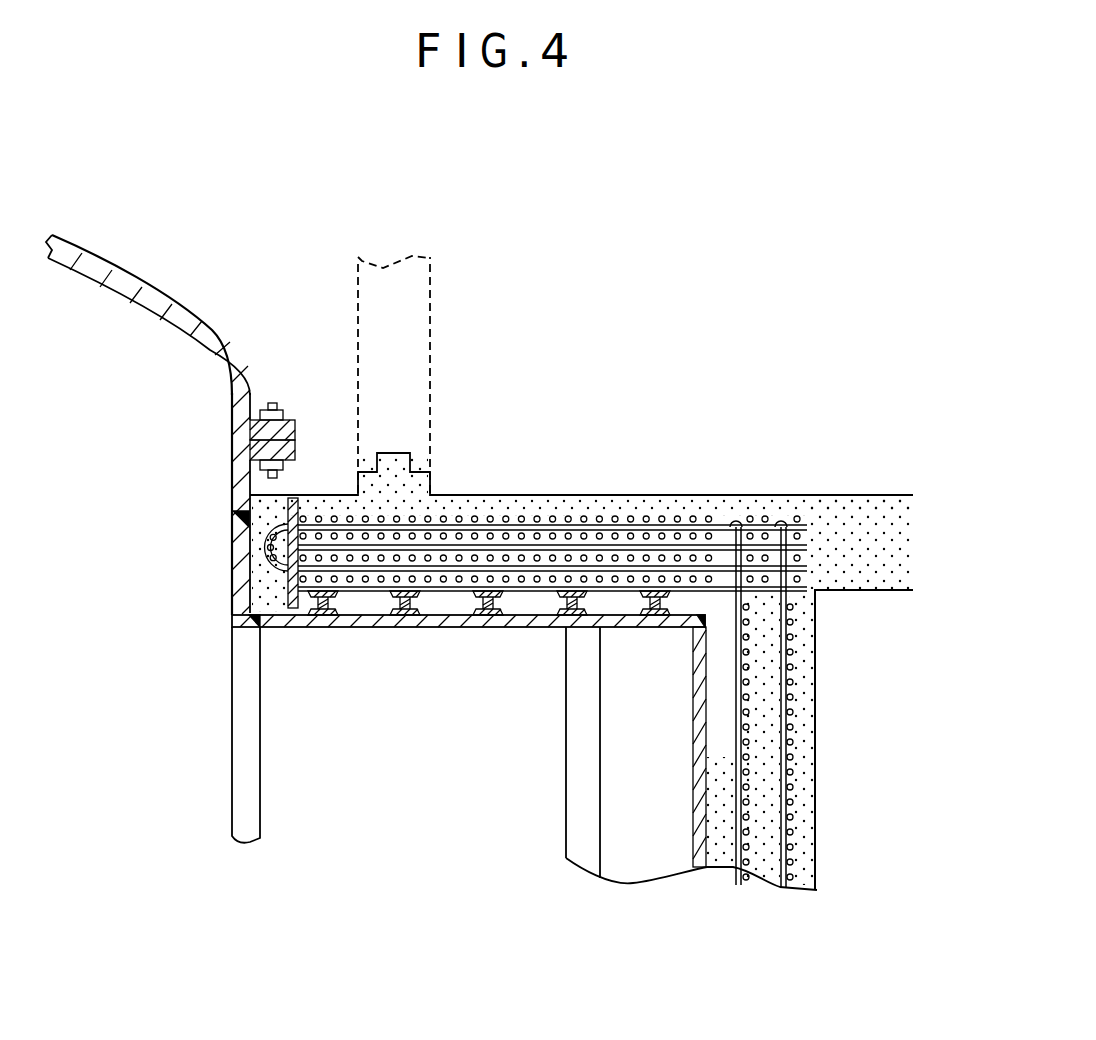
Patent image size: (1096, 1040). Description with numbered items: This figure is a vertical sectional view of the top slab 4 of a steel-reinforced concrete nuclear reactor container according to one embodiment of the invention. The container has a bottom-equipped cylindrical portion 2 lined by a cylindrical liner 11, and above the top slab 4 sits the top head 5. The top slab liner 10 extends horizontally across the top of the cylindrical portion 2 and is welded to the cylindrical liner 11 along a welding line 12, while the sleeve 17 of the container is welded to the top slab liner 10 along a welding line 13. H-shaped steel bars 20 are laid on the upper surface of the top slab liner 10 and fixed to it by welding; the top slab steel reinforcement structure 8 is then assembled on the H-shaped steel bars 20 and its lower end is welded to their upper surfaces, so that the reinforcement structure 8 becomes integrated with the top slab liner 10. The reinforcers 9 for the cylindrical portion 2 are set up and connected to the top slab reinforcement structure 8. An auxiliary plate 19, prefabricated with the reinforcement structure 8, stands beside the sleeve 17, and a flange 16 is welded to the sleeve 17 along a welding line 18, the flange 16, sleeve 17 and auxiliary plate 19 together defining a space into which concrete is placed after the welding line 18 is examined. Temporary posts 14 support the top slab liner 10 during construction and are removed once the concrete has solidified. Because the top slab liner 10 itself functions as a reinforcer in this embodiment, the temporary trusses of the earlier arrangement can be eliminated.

The cylindrical portion 2 is at (805, 755).
The top slab 4 is at (617, 497).
The top head 5 is at (192, 296).
The top slab steel reinforcement structure 8 is at (518, 516).
The reinforcers for the cylindrical portion 9 is at (788, 713).
The top slab liner 10 is at (492, 626).
The cylindrical liner 11 is at (697, 727).
The welding line 12 is at (740, 633).
The welding line 13 is at (248, 618).
The temporary posts 14 is at (258, 722).
The flange 16 is at (291, 450).
The sleeve 17 is at (232, 566).
The welding line 18 is at (232, 517).
The auxiliary plate 19 is at (297, 492).
The H-shaped steel bars 20 is at (327, 626).